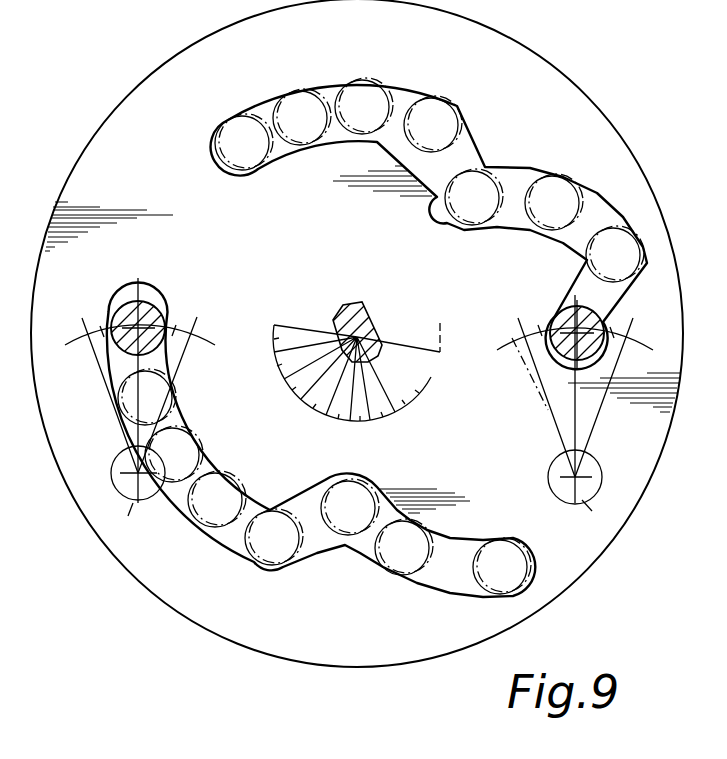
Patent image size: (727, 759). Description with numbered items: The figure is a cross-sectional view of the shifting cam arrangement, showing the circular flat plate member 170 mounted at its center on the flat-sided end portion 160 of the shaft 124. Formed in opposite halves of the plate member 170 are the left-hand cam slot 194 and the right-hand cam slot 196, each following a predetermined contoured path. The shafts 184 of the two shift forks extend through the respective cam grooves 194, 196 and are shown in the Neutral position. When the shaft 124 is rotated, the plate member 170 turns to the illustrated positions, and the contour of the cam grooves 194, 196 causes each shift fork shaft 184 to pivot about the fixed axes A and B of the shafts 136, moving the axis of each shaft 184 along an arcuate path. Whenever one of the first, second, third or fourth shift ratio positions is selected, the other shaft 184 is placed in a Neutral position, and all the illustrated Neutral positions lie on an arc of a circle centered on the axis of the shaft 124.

The circular flat plate member 170 is at (118, 122).
The right-hand cam slot 196 is at (503, 168).
The left-hand cam slot 194 is at (208, 461).
The shaft of shift fork 184 is at (150, 317).
The flat-sided end portion 160 is at (366, 306).
The shaft 124 is at (365, 361).
The shafts defining fixed pivot axes 136 is at (110, 473).